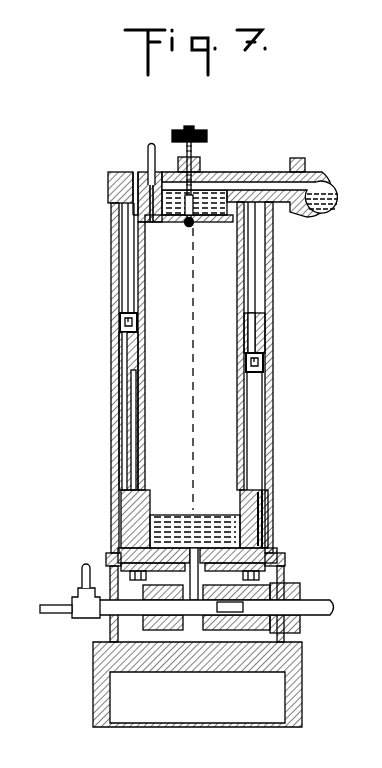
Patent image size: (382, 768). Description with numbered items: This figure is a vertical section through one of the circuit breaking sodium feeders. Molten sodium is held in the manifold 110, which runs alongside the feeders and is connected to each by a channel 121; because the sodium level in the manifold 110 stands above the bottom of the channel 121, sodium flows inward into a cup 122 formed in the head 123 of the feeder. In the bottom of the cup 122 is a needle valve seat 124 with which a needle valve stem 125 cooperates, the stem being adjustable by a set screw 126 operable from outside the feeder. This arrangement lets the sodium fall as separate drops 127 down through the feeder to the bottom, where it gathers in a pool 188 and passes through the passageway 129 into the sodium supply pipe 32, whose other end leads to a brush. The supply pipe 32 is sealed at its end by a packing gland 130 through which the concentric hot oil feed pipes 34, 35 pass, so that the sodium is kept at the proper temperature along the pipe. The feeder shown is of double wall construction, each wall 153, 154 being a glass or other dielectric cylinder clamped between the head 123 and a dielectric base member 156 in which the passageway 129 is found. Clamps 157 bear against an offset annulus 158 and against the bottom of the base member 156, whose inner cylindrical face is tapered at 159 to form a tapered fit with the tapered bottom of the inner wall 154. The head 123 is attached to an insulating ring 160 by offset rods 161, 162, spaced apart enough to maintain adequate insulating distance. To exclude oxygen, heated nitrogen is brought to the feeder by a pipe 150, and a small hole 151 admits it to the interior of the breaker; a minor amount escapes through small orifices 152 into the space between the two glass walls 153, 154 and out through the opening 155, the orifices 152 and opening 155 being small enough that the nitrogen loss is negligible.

The manifold 110 is at (318, 176).
The channel 121 is at (266, 172).
The cup 122 is at (228, 186).
The head 123 is at (178, 170).
The needle valve seat 124 is at (195, 220).
The needle valve stem 125 is at (185, 207).
The set screw 126 is at (200, 134).
The drops 127 is at (195, 278).
The passageway 129 is at (196, 602).
The packing gland 130 is at (148, 630).
The pipe 150 is at (148, 145).
The small hole 151 is at (150, 224).
The small orifices 152 is at (142, 480).
The wall 153 is at (112, 276).
The wall 154 is at (141, 290).
The opening 155 is at (134, 174).
The dielectric base member 156 is at (270, 521).
The clamps 157 is at (282, 572).
The offset annulus 158 is at (284, 562).
The tapered face 159 is at (272, 501).
The insulating ring 160 is at (271, 335).
The offset rod 161 is at (126, 300).
The offset rod 162 is at (131, 393).
The liquid 188 is at (214, 515).
The sodium supply pipe 32 is at (236, 613).
The oil supply pipe 34 is at (82, 572).
The oil supply pipe 35 is at (50, 605).